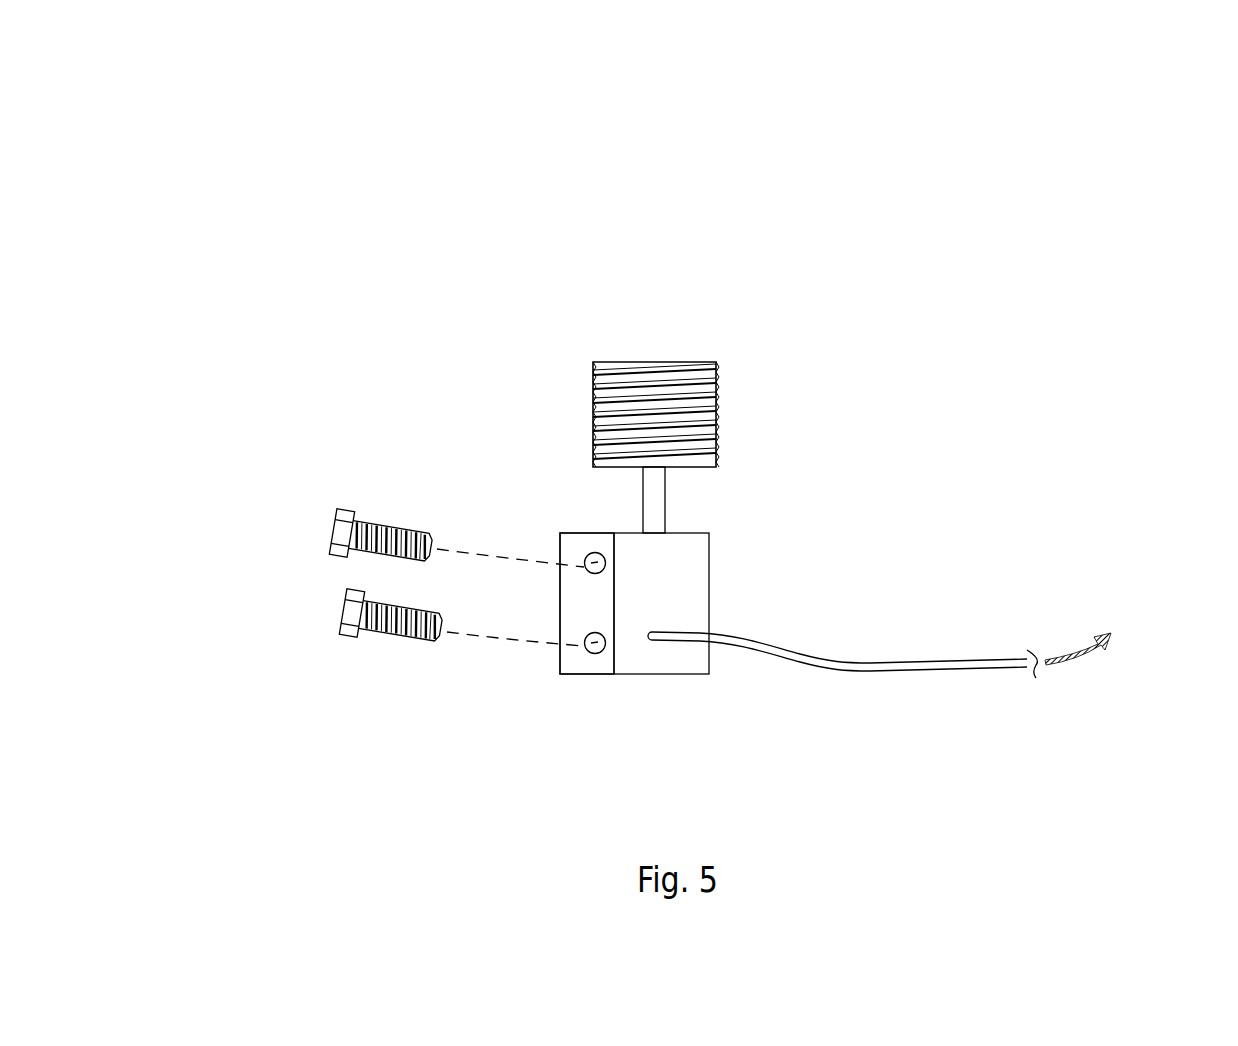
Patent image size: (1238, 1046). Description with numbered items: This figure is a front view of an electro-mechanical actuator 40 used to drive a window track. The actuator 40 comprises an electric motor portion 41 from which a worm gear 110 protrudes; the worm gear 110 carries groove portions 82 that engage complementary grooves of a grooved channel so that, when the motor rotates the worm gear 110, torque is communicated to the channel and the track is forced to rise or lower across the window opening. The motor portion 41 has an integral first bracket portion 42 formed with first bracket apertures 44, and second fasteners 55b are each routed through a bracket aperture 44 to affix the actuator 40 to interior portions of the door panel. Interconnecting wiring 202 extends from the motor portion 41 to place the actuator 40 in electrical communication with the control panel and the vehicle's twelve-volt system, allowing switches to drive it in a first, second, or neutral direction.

The electro-mechanical actuator 40 is at (228, 146).
The motor portion 41 is at (690, 577).
The first bracket portion 42 is at (560, 533).
The first bracket aperture 44 is at (589, 571).
The second fastener 55b is at (352, 610).
The groove portion 82 is at (607, 381).
The worm gear 110 is at (716, 410).
The interconnecting wiring 202 is at (886, 660).